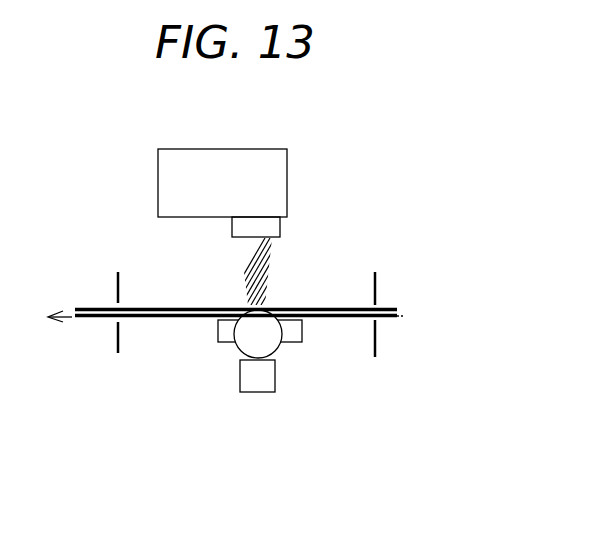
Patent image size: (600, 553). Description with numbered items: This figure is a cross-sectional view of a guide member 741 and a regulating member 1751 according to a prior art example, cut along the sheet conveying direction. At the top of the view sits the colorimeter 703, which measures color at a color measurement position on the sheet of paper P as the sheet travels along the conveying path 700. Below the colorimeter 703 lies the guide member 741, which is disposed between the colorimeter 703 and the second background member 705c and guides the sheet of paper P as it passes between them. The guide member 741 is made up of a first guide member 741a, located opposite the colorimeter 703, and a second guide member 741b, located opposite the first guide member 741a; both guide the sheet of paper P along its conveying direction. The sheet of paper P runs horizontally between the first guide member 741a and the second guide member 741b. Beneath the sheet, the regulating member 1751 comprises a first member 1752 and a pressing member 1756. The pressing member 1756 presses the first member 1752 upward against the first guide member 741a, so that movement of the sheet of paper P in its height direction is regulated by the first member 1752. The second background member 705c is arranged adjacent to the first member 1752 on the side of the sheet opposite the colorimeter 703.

The colorimeter 703 is at (288, 180).
The guide member 741 is at (334, 297).
The first guide member 741a is at (376, 288).
The second guide member 741b is at (376, 347).
The regulating member 1751 is at (246, 418).
The first member 1752 is at (260, 333).
The pressing member 1756 is at (235, 420).
The second background member 705c is at (217, 333).
The sheet of paper P is at (103, 294).
The conveying path 700 is at (72, 317).